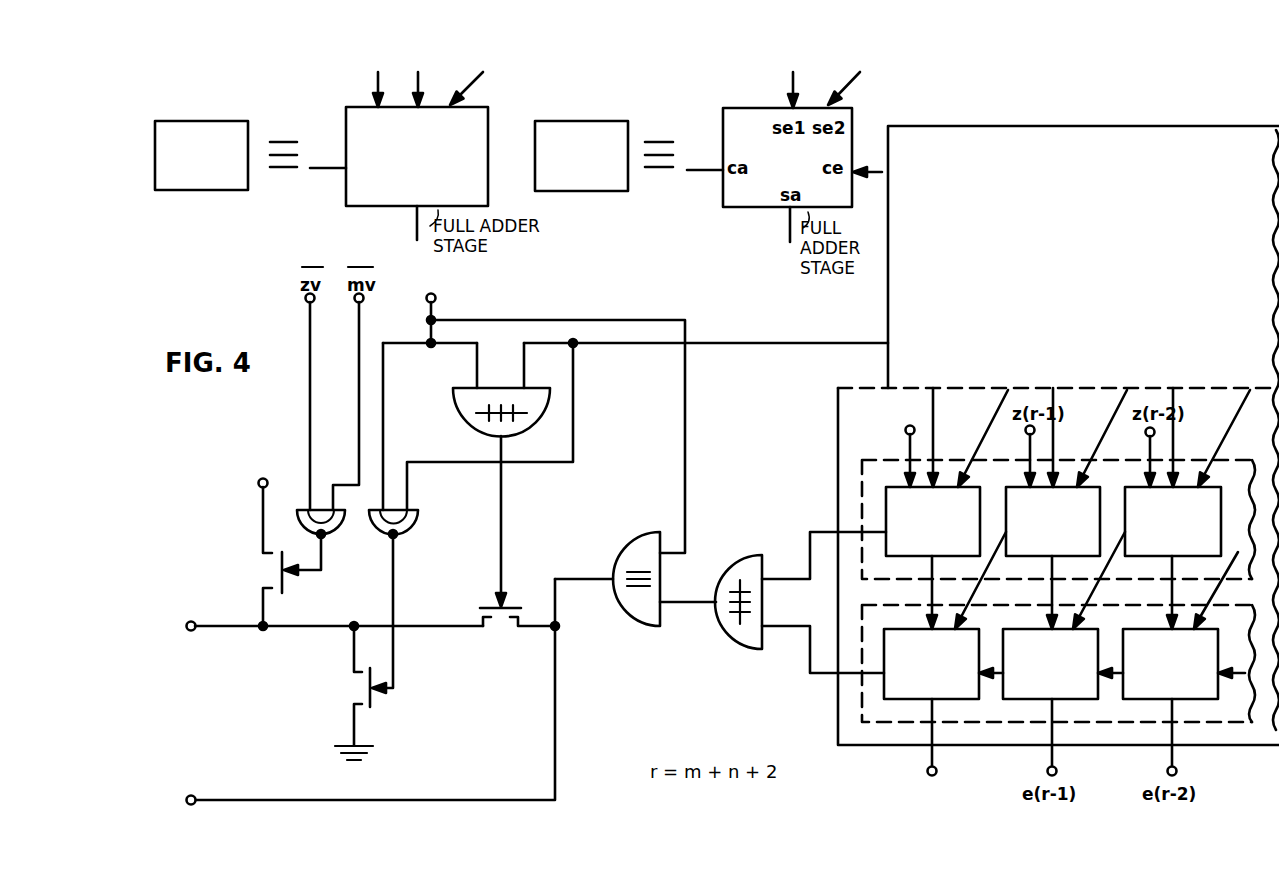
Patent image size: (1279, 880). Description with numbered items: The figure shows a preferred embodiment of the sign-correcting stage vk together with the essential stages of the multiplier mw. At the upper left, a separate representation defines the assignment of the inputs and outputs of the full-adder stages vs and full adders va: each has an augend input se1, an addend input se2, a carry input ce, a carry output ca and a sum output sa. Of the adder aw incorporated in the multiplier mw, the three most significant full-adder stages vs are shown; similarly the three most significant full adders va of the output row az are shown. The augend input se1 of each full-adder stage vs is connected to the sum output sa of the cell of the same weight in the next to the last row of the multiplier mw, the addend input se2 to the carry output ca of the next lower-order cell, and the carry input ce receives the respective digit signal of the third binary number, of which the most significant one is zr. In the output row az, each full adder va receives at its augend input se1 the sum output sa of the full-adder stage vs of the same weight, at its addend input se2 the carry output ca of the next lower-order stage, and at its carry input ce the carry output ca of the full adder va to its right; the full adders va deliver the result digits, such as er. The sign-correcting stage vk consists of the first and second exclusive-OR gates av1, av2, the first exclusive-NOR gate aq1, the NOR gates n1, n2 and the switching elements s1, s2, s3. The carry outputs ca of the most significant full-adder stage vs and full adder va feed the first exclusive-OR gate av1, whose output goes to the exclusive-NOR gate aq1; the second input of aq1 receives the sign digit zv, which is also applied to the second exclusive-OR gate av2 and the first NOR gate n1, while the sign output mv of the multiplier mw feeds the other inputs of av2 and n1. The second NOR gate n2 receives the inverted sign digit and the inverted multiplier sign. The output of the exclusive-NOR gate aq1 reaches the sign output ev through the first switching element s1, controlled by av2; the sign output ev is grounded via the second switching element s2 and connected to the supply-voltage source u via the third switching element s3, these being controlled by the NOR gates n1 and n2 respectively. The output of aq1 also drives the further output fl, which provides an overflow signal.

The full-adder stage vs is at (688, 338).
The full adder va is at (876, 410).
The carry input ce is at (375, 127).
The augend input se1 is at (417, 127).
The addend input se2 is at (457, 127).
The carry output ca is at (361, 168).
The sum output sa is at (417, 212).
The multiplier mw is at (1104, 126).
The adder aw is at (862, 467).
The output row az is at (862, 715).
The digit signal of the third binary number zr is at (907, 445).
The digit signal of the result er is at (930, 751).
The sign digit zv is at (553, 414).
The sign output of the multiplier mv is at (635, 333).
The sign-correcting stage vk is at (648, 391).
The second exclusive-OR gate av2 is at (463, 420).
The second two-input NOR gate n2 is at (319, 542).
The first two-input NOR gate n1 is at (397, 601).
The supply-voltage source u is at (264, 505).
The third switching element s3 is at (255, 589).
The sign output ev is at (332, 638).
The second switching element s2 is at (348, 693).
The first switching element s1 is at (517, 634).
The further output fl is at (359, 695).
The first exclusive-NOR gate aq1 is at (637, 536).
The first exclusive-OR gate av1 is at (748, 557).